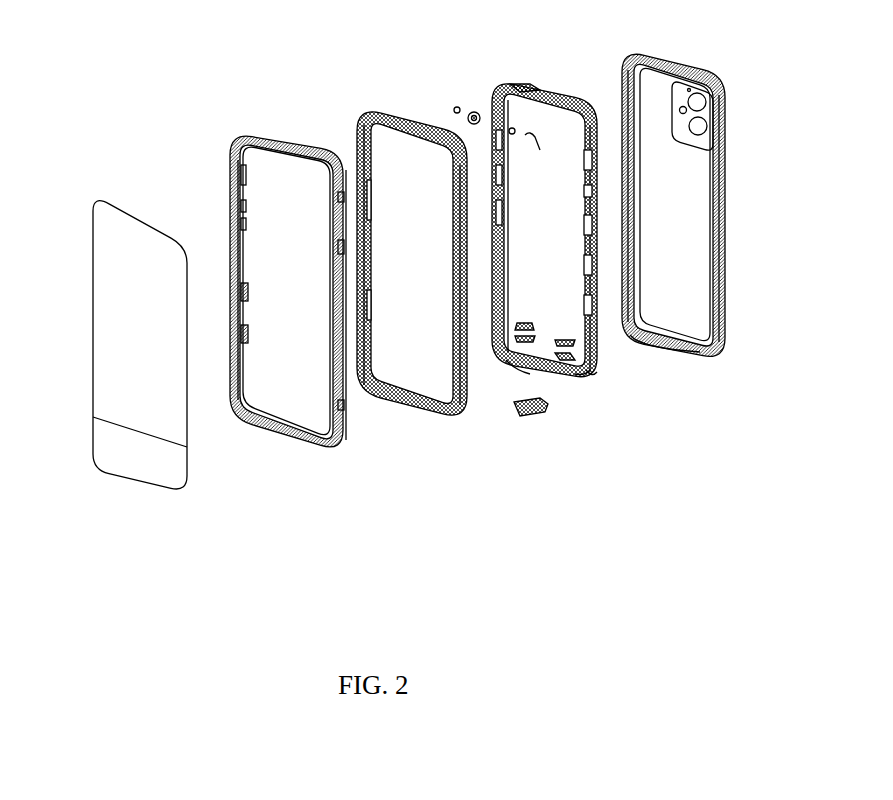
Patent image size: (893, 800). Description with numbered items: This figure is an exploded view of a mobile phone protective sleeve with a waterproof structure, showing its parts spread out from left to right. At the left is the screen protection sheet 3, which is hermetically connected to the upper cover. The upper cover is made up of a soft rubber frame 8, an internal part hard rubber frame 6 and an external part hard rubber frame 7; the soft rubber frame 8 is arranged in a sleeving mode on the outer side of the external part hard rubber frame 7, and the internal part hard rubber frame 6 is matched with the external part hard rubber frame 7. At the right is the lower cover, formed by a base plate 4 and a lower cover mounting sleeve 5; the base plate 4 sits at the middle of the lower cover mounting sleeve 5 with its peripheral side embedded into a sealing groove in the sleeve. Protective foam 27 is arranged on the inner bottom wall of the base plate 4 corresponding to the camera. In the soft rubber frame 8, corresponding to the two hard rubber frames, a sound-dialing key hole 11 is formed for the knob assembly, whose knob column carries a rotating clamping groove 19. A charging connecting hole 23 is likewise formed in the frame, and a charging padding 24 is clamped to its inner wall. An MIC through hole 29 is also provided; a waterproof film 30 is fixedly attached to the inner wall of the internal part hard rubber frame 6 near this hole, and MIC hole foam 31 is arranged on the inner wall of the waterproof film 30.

The screen protection sheet 3 is at (120, 310).
The base plate 4 is at (675, 268).
The lower cover mounting sleeve 5 is at (700, 194).
The internal part hard rubber frame 6 is at (367, 107).
The external part hard rubber frame 7 is at (568, 257).
The soft rubber frame 8 is at (270, 140).
The sound-dialing key hole 11 is at (520, 84).
The rotating clamping groove 19 is at (475, 111).
The charging connecting hole 23 is at (532, 372).
The charging padding 24 is at (548, 414).
The protective foam 27 is at (700, 80).
The MIC through hole 29 is at (562, 386).
The waterproof film 30 is at (597, 378).
The MIC hole foam 31 is at (530, 325).